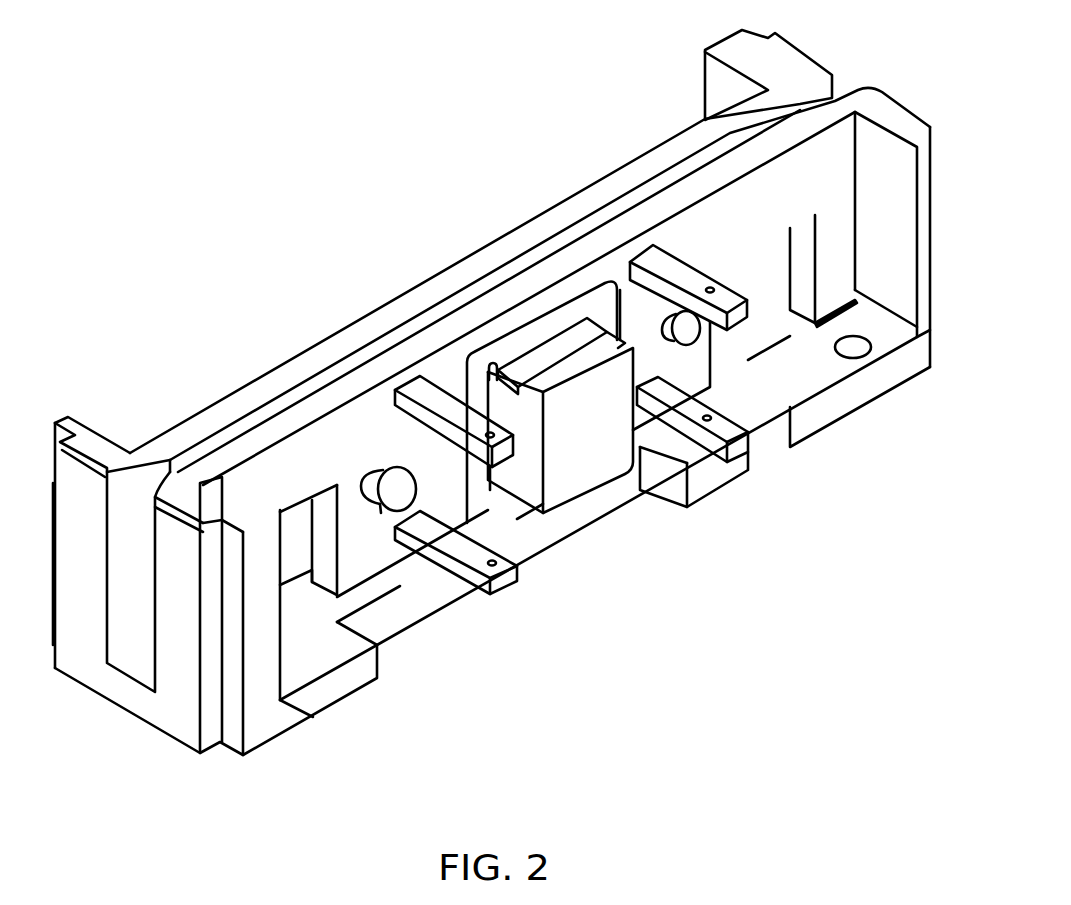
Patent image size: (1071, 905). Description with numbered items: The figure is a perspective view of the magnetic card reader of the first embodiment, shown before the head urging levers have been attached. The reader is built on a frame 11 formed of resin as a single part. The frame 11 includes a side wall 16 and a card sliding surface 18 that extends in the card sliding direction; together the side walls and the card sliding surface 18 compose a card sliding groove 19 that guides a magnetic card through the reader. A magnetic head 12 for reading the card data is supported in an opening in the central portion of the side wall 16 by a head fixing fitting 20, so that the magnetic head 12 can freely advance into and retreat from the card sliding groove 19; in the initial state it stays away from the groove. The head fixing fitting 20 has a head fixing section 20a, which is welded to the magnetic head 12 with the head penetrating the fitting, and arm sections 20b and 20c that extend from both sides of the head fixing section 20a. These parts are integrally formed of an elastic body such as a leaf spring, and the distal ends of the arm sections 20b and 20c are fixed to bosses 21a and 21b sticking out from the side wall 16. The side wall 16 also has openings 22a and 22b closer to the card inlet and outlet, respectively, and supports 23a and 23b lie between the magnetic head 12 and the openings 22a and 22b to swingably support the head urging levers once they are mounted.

The frame 11 is at (310, 712).
The magnetic head 12 is at (590, 468).
The side wall 16 is at (710, 175).
The card sliding surface 18 is at (140, 672).
The card sliding groove 19 is at (830, 96).
The head fixing fitting 20 is at (520, 306).
The head fixing section 20a is at (560, 320).
The arm section 20b is at (612, 305).
The arm section 20c is at (420, 466).
The boss 21a is at (650, 340).
The boss 21b is at (373, 470).
The opening 22a is at (800, 290).
The opening 22b is at (338, 565).
The support 23a is at (737, 320).
The support 23b is at (510, 452).